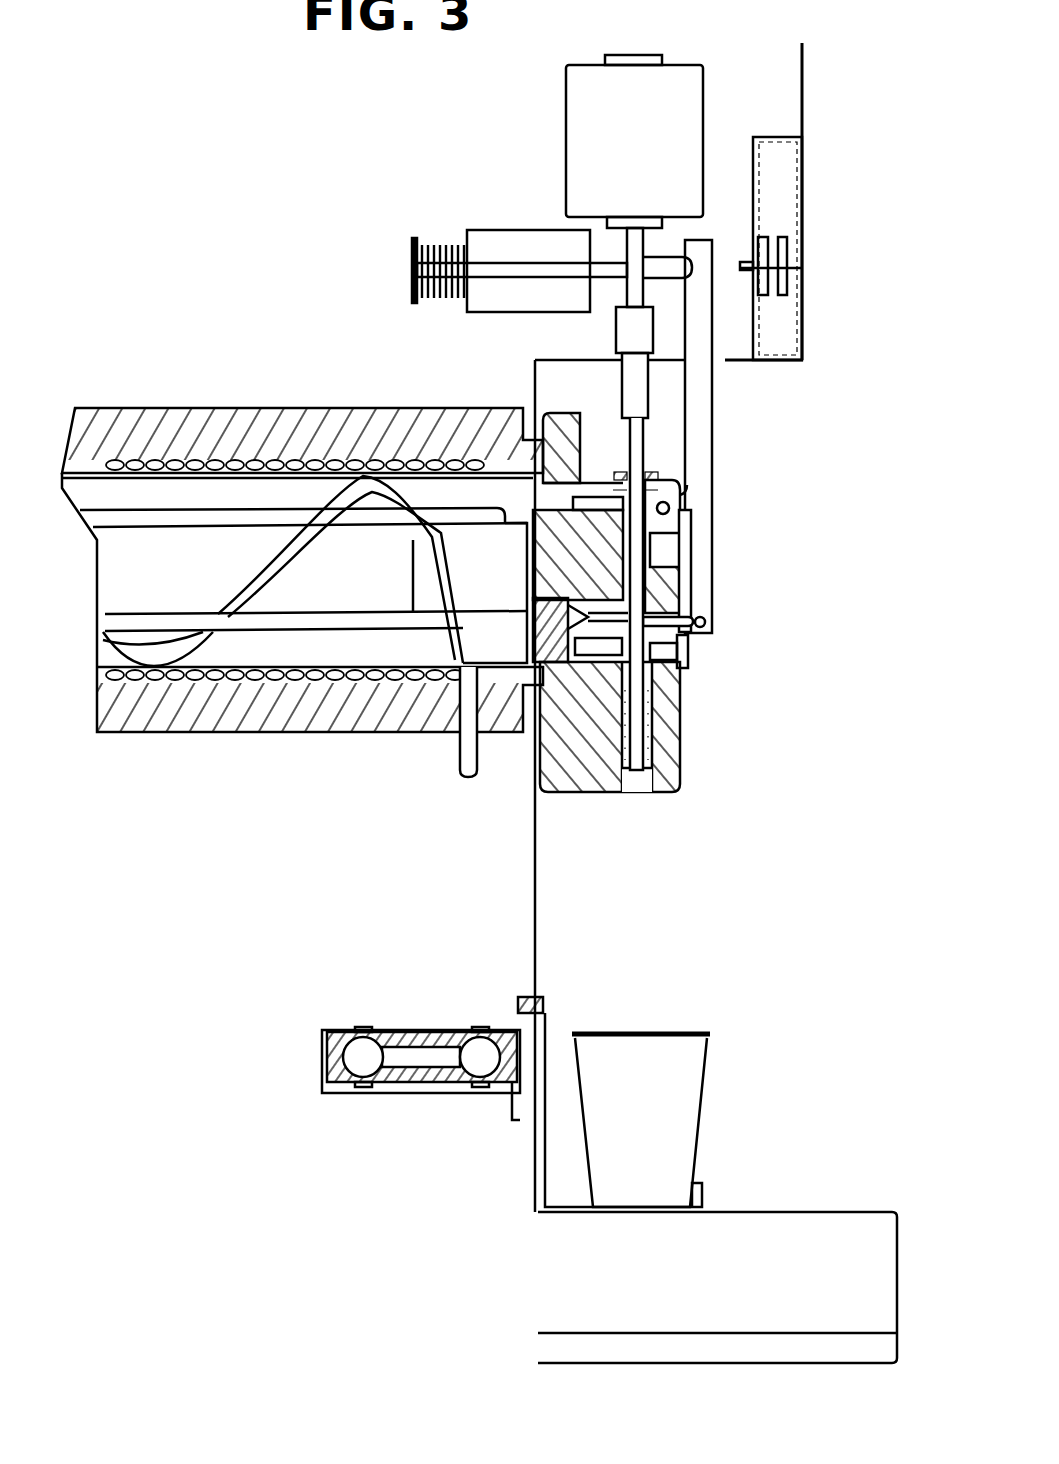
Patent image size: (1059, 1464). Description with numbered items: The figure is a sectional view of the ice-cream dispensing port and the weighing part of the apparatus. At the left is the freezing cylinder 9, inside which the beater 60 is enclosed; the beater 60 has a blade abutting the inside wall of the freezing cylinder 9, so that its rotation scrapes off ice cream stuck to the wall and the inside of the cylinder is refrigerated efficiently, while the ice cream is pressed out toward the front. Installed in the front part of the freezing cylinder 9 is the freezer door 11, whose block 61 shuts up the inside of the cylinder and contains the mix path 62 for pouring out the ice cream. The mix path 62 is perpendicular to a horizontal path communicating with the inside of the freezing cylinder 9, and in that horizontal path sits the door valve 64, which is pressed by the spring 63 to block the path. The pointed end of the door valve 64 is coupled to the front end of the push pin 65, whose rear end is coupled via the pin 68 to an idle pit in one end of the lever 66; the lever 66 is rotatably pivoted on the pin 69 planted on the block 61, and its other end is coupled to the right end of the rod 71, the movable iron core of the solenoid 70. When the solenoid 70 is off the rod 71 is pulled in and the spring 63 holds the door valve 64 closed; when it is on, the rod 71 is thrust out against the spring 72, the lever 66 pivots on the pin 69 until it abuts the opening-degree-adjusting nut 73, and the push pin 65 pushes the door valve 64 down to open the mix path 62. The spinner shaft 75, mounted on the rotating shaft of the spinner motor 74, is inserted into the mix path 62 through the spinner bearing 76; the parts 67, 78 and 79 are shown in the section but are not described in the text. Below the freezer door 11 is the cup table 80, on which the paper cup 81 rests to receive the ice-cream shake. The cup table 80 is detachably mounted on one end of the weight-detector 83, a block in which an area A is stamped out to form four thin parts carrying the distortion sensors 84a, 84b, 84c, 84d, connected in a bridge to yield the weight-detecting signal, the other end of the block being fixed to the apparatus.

The freezing cylinder 9 is at (294, 408).
The beater 60 is at (190, 522).
The block 61 is at (583, 797).
The mix path 62 is at (640, 797).
The spring 63 is at (533, 637).
The door valve 64 is at (530, 580).
The push pin 65 is at (693, 597).
The lever 66 is at (712, 440).
The pin 67 is at (710, 633).
The pin 68 is at (712, 620).
The pin 69 is at (669, 506).
The solenoid 70 is at (497, 230).
The rod 71 is at (600, 280).
The spring 72 is at (443, 300).
The opening-degree-adjusting nut 73 is at (802, 272).
The spinner motor 74 is at (703, 80).
The spinner shaft 75 is at (667, 753).
The spinner bearing 76 is at (660, 477).
The bolt 78 is at (593, 483).
The bolt 79 is at (662, 672).
The cup table 80 is at (550, 1002).
The paper cup 81 is at (643, 1032).
The weight-detector 83 is at (417, 1030).
The distortion sensor 84a is at (363, 1027).
The distortion sensor 84b is at (483, 1027).
The distortion sensor 84c is at (363, 1087).
The distortion sensor 84d is at (477, 1087).
The stamped-out area A is at (467, 1030).
The freezer door 11 is at (690, 727).